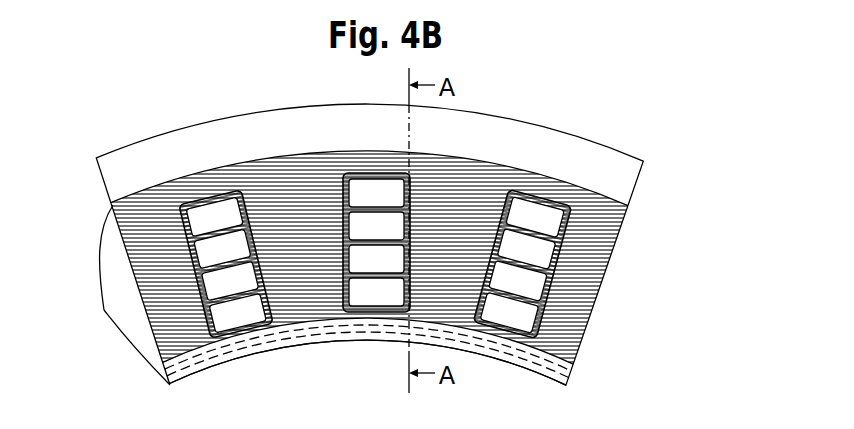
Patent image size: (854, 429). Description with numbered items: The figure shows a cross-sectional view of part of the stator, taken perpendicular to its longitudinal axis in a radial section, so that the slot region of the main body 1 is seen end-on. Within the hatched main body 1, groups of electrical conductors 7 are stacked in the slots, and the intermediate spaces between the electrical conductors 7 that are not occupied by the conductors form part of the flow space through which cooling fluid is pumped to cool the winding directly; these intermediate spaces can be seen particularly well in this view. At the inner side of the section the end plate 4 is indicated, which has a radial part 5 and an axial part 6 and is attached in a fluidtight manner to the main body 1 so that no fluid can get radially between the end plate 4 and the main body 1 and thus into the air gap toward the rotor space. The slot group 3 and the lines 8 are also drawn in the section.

The main body 1 is at (645, 161).
The slot conductor group 3 is at (411, 252).
The end plate 4 is at (126, 295).
The radial part 5 is at (620, 233).
The axial part 6 is at (575, 364).
The electrical conductors 7 is at (376, 242).
The dashed insulation lines 8 is at (331, 344).